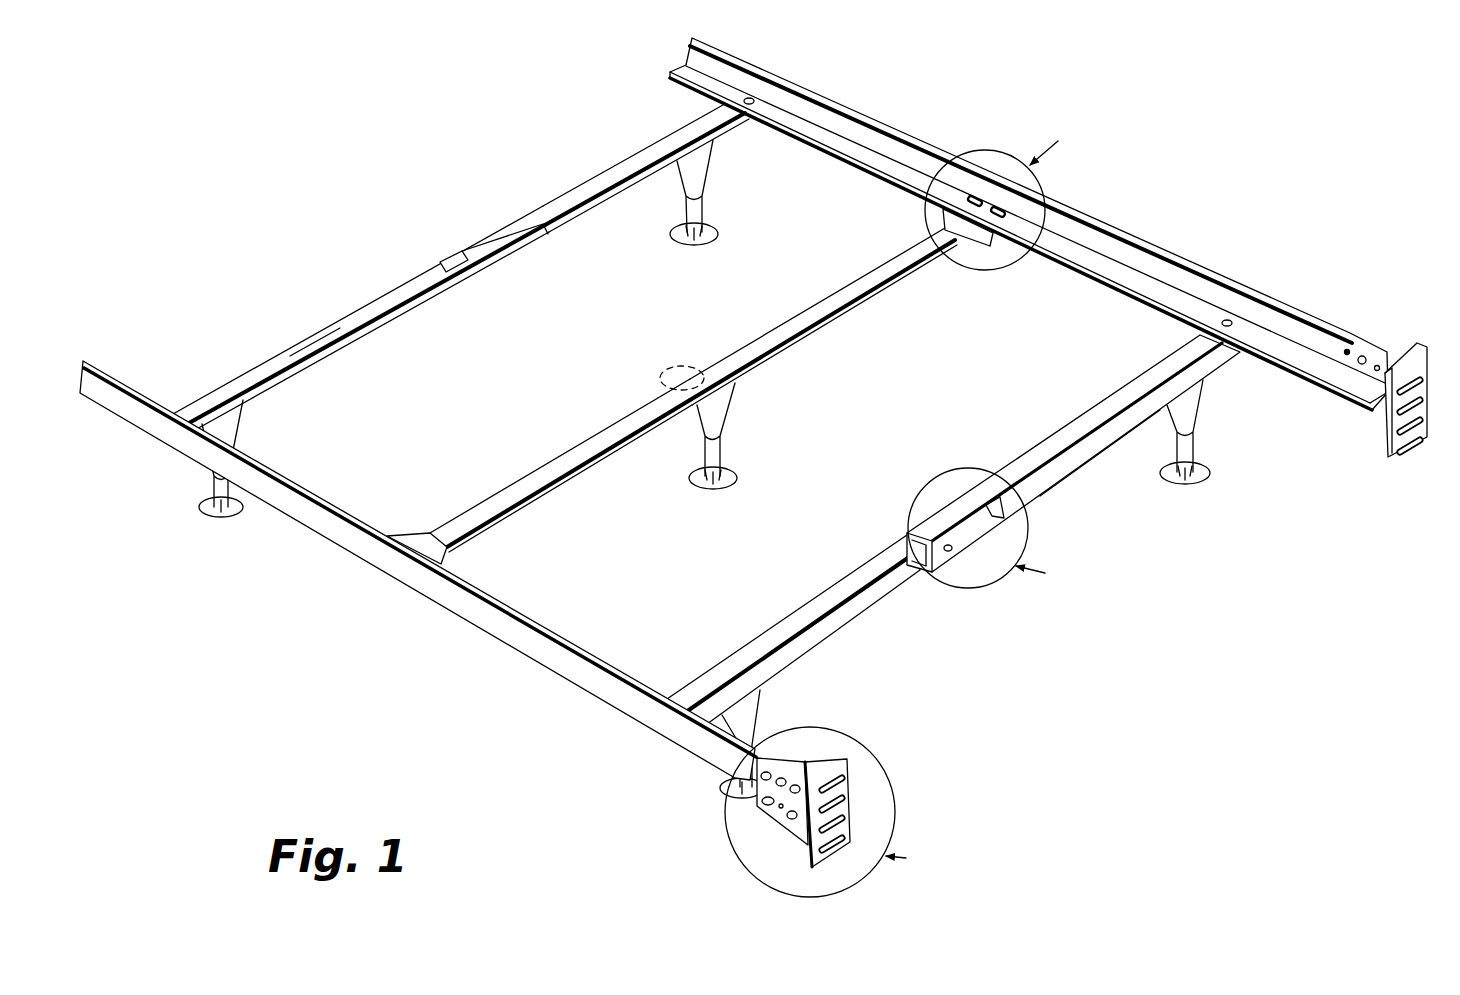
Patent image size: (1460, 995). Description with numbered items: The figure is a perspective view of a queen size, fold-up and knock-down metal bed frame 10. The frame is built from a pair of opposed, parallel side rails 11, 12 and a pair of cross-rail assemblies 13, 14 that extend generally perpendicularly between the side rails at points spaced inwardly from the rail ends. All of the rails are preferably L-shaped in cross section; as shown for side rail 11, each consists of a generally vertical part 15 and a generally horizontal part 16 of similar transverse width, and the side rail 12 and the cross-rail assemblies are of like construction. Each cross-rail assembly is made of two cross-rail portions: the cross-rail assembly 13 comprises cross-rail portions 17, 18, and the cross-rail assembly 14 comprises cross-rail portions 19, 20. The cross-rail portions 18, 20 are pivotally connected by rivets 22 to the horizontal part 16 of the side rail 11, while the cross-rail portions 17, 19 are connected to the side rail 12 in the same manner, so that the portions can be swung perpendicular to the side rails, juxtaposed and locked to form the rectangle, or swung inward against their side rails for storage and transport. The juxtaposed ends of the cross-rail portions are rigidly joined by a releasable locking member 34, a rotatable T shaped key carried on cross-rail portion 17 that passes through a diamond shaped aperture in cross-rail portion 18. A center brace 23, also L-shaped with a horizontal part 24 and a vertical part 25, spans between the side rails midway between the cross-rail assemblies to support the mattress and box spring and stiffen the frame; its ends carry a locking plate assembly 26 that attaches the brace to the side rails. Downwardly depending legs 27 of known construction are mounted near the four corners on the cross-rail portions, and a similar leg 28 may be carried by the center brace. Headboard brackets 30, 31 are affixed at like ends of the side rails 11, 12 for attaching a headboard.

The bed frame 10 is at (1256, 104).
The side rail 11 is at (1166, 247).
The side rail 12 is at (468, 612).
The cross-rail assembly 13 is at (1063, 418).
The cross-rail assembly 14 is at (382, 304).
The vertically extending part 15 is at (1100, 238).
The horizontally extending part 16 is at (1108, 268).
The cross-rail portion 17 is at (806, 610).
The cross-rail portion 18 is at (1112, 442).
The cross-rail portion 19 is at (313, 346).
The cross-rail portion 20 is at (589, 198).
The rivets 22 is at (754, 100).
The center brace 23 is at (792, 326).
The horizontal part 24 is at (599, 452).
The vertical part 25 is at (688, 365).
The locking plate assembly 26 is at (968, 228).
The legs 27 is at (720, 199).
The leg 28 is at (742, 438).
The headboard bracket 30 is at (872, 786).
The headboard bracket 31 is at (1433, 346).
The releasable locking member 34 is at (1006, 520).